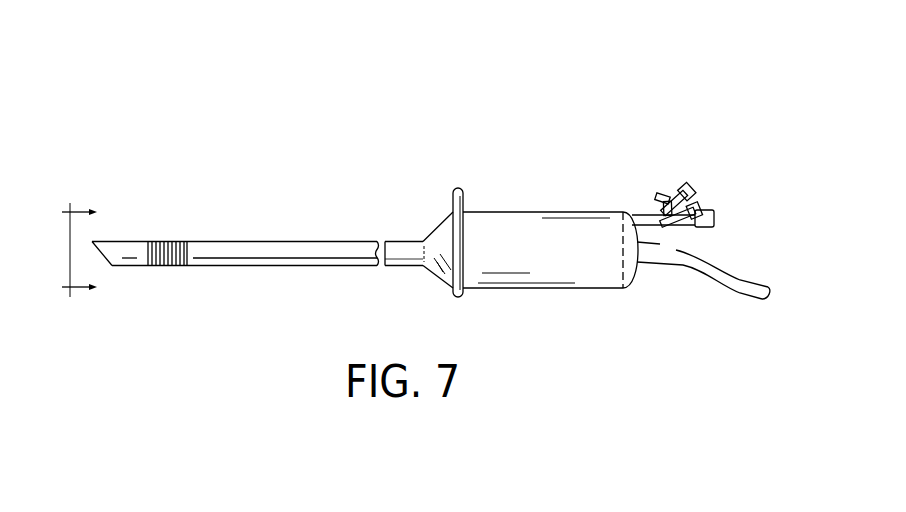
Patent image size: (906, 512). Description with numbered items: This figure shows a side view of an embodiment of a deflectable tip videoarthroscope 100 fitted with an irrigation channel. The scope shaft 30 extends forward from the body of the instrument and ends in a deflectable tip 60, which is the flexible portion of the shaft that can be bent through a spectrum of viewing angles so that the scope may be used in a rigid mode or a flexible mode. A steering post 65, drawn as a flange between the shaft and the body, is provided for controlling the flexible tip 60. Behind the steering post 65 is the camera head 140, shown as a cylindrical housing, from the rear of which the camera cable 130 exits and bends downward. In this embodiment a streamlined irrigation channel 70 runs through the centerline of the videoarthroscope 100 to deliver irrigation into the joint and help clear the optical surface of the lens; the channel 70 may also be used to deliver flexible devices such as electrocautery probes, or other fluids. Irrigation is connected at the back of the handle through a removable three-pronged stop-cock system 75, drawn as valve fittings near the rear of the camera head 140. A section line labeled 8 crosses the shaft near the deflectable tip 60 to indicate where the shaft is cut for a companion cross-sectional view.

The section line 8- 8 is at (71, 250).
The scope shaft 30 is at (345, 250).
The deflectable tip 60 is at (167, 252).
The steering post 65 is at (453, 208).
The irrigation channel 70 is at (713, 211).
The stop-cock system 75 is at (633, 212).
The videoarthroscope 100 is at (506, 134).
The camera cable 130 is at (727, 294).
The camera head 140 is at (554, 277).